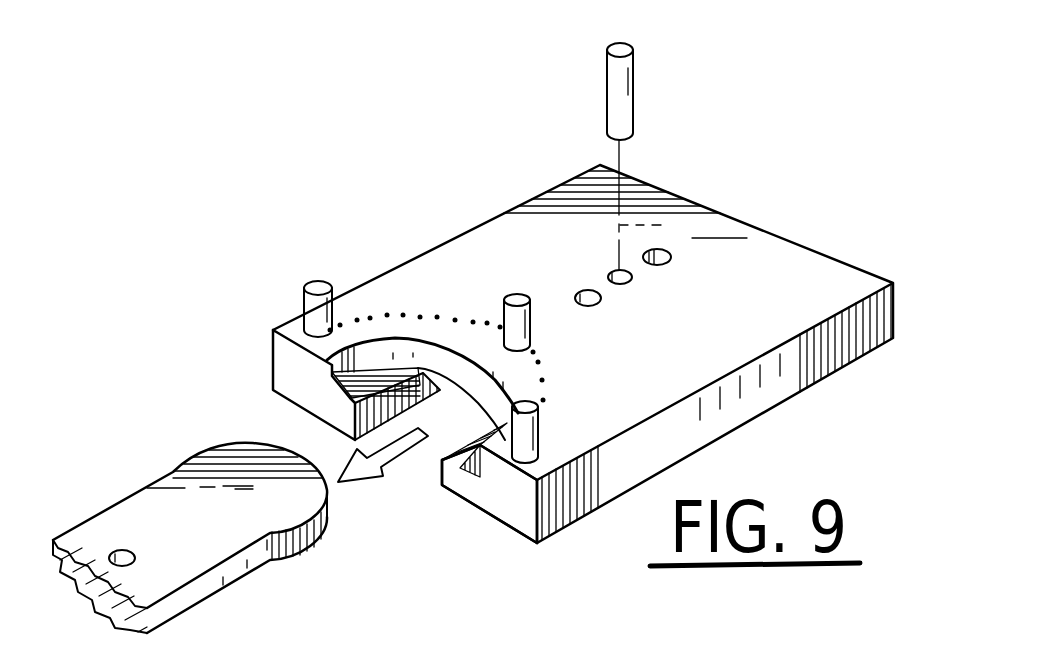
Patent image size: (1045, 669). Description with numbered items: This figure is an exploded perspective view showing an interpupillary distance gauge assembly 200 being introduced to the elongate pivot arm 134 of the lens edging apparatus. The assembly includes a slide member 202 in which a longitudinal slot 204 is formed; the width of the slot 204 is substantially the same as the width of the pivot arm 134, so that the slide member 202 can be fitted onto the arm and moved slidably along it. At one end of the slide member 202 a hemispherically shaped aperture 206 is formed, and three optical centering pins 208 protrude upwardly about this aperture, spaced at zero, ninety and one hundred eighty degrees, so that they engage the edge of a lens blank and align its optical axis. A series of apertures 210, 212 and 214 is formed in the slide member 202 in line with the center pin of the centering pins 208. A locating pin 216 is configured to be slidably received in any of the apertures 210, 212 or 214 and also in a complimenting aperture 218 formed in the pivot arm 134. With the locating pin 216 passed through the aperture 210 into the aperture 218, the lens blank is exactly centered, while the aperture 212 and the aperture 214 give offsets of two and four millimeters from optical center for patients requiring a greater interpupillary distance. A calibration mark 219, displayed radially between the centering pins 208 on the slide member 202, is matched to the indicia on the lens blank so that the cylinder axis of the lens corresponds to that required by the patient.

The interpupillary distance (IPD) gauge assembly 200 is at (407, 183).
The slide member 202 is at (755, 243).
The longitudinal slot 204 is at (433, 473).
The hemispherically shaped aperture 206 is at (275, 368).
The optical centering pins 208 is at (517, 295).
The aperture 210 is at (588, 292).
The aperture 212 is at (630, 285).
The aperture 214 is at (660, 250).
The locating pin 216 is at (637, 100).
The complimenting aperture 218 is at (125, 552).
The calibration mark 219 is at (453, 287).
The elongate pivot arm 134 is at (202, 495).